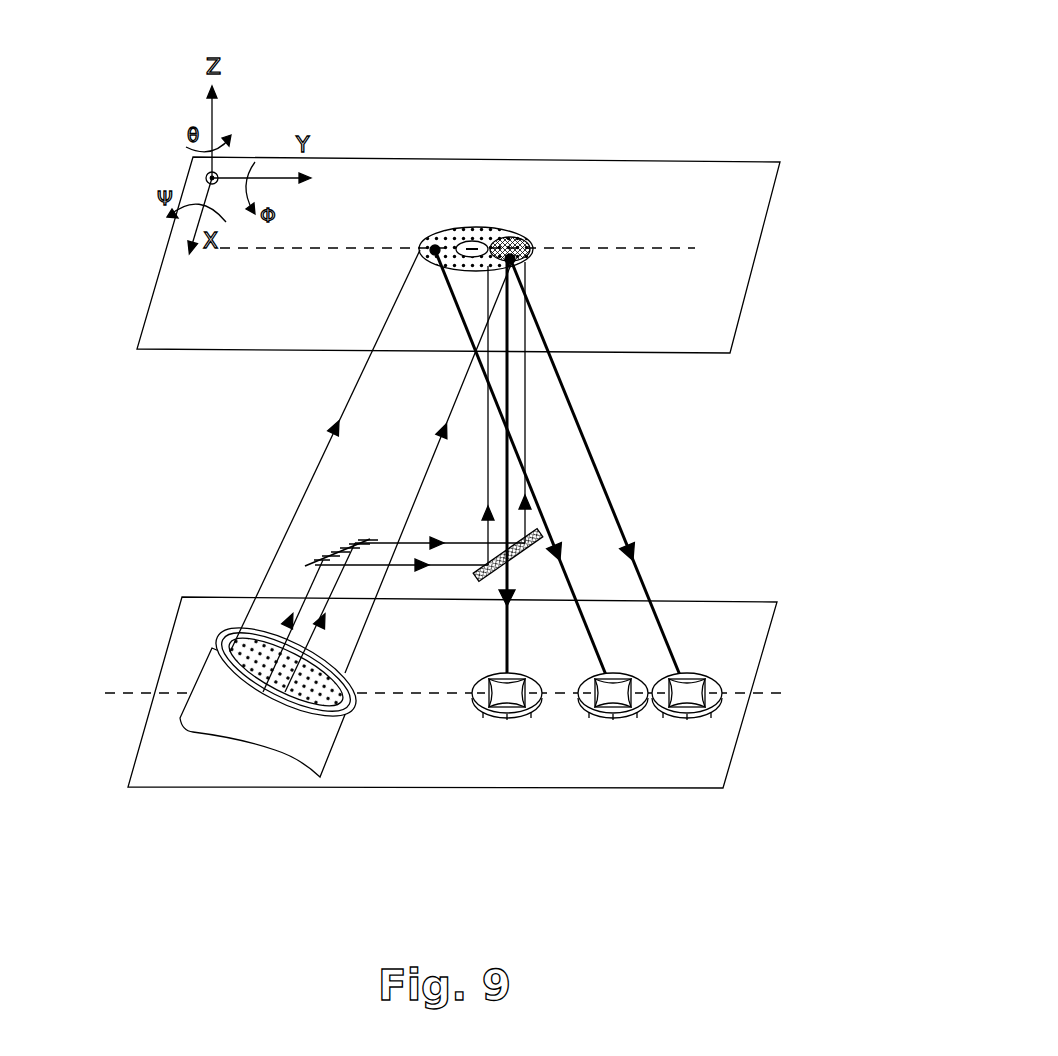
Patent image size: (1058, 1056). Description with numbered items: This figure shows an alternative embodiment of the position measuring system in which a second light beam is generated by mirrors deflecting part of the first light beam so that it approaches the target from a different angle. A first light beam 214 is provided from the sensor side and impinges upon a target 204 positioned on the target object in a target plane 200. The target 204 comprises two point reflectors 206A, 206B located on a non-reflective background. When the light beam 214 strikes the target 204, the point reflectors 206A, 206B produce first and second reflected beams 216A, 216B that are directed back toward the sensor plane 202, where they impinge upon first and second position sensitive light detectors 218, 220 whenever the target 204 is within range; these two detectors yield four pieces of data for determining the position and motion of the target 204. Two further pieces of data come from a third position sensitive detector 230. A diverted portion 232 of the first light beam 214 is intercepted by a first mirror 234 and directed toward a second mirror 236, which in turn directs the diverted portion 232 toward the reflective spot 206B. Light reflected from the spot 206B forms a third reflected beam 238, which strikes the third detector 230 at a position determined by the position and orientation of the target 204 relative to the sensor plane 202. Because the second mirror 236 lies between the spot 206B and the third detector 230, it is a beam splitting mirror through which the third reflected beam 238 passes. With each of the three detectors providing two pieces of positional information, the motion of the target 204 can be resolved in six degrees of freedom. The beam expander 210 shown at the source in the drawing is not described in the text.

The target plane 200 is at (748, 193).
The sensor plane 202 is at (727, 623).
The target 204 is at (460, 230).
The point reflector 206A is at (433, 246).
The point reflector 206B is at (513, 240).
The beam expander 210 is at (193, 731).
The first light beam 214 is at (320, 464).
The first reflected beam 216A is at (537, 490).
The second reflected beam 216B is at (617, 507).
The first position sensitive light detector 218 is at (626, 714).
The second position sensitive light detector 220 is at (712, 722).
The third position sensitive detector 230 is at (510, 717).
The diverted portion of first light beam 232 is at (441, 541).
The first mirror 234 is at (318, 562).
The second mirror 236 is at (522, 560).
The third reflected beam 238 is at (505, 413).